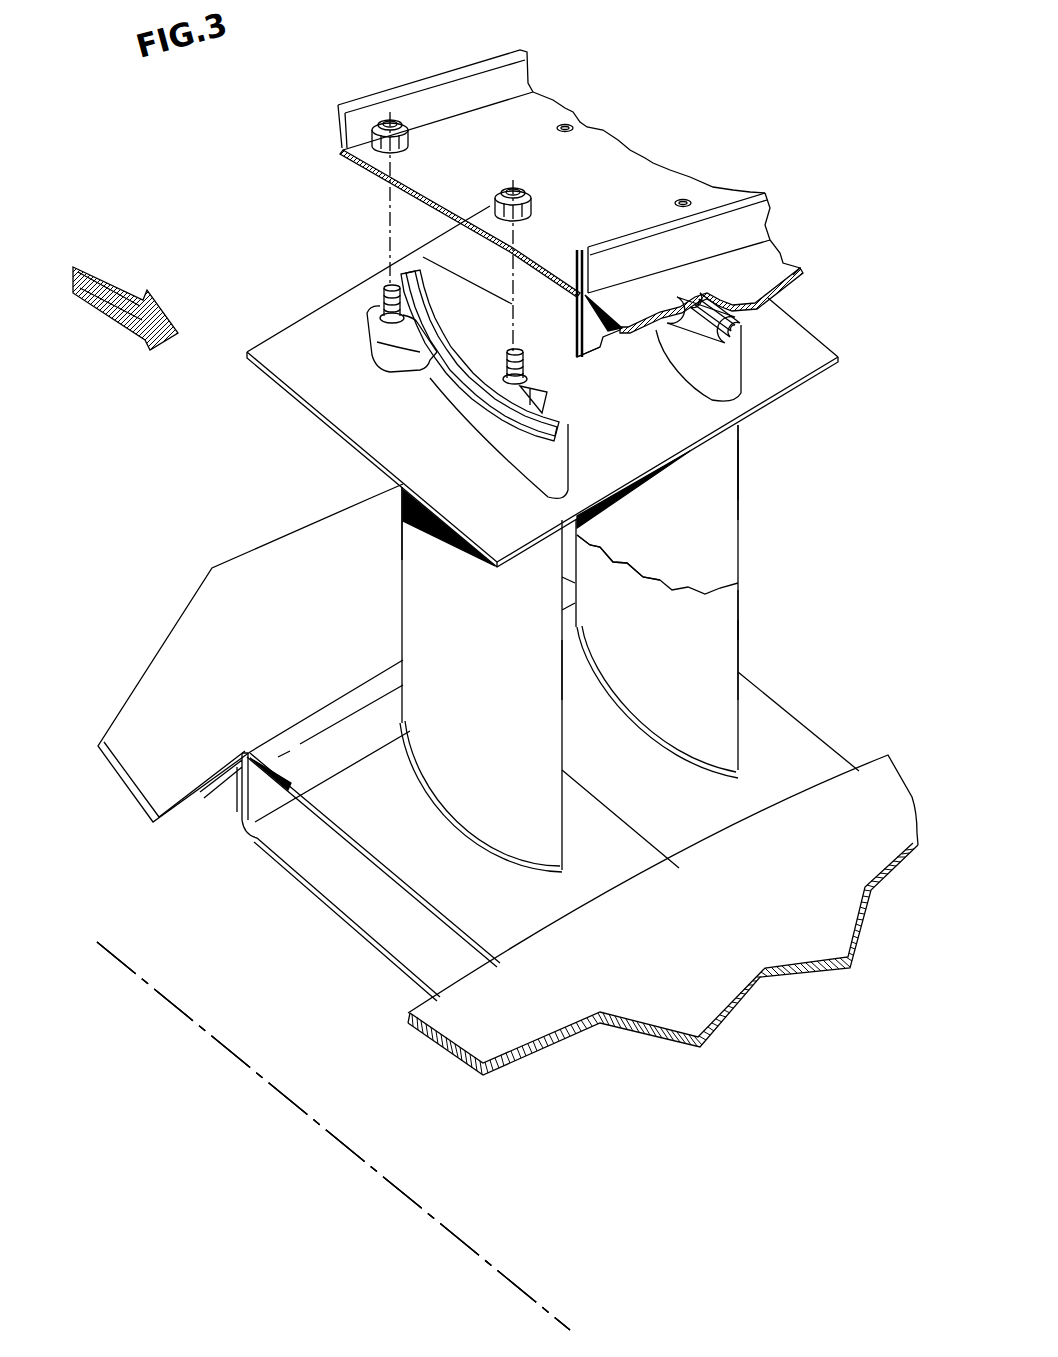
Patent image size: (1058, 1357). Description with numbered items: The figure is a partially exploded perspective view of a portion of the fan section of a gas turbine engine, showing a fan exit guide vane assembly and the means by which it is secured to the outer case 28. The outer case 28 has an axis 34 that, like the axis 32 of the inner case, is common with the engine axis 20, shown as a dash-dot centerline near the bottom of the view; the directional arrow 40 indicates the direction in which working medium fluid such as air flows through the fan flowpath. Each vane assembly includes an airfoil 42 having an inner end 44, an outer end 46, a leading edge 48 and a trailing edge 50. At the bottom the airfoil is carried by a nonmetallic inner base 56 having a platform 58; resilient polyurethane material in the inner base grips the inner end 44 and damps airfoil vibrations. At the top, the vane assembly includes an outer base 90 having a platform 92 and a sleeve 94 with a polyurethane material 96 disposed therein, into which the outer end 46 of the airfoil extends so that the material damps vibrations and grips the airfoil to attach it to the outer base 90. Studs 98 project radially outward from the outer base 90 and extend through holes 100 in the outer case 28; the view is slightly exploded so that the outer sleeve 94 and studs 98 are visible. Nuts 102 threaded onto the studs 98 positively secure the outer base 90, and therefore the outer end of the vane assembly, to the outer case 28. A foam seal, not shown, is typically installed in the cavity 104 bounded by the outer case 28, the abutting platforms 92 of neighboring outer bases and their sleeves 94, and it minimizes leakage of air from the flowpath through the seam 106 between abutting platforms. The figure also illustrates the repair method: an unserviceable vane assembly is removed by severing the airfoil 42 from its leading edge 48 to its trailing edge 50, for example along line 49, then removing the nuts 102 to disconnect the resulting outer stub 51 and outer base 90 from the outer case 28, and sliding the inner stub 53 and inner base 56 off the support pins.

The engine axis 20 is at (490, 1267).
The axis of inner case 32 is at (333, 1136).
The axis of outer case 34 is at (333, 1136).
The outer case 28 is at (613, 162).
The directional arrow 40 is at (112, 283).
The airfoil 42 is at (443, 630).
The inner end 44 is at (732, 753).
The outer end 46 is at (717, 443).
The leading edge 48 is at (401, 543).
The line 49 is at (665, 588).
The trailing edge 50 is at (739, 612).
The outer stub 51 is at (723, 463).
The inner stub 53 is at (717, 643).
The inner base 56 is at (337, 830).
The platform 58 is at (328, 757).
The outer base 90 is at (307, 402).
The platform 92 is at (327, 347).
The sleeve 94 is at (562, 460).
The polyurethane material 96 is at (424, 283).
The studs 98 is at (380, 302).
The holes 100 is at (392, 174).
The nuts 102 is at (410, 128).
The cavity 104 is at (463, 262).
The seam 106 is at (590, 393).